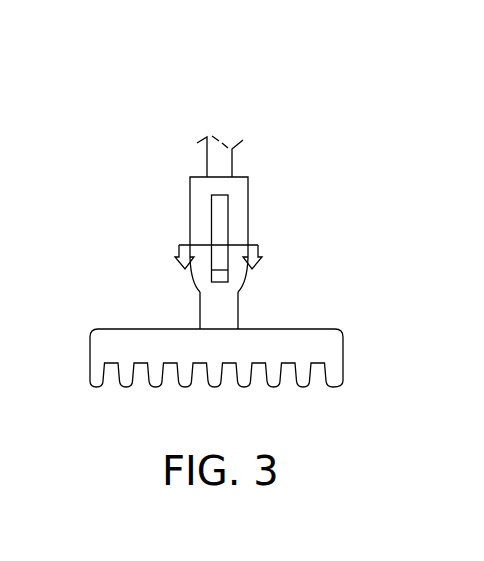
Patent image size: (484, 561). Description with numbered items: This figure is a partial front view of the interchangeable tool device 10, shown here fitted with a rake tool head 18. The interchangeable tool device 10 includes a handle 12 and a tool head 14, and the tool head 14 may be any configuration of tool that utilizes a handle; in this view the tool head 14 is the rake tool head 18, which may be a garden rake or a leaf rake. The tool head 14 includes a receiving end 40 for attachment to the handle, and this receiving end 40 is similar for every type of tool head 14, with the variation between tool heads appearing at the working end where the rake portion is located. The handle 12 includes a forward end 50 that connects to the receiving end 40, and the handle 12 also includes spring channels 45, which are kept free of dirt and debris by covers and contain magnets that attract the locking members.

The interchangeable tool device 10 is at (260, 93).
The handle 12 is at (245, 189).
The tool head 14 is at (236, 291).
The rake tool head 18 is at (333, 340).
The receiving end 40 is at (200, 272).
The spring channels 45 is at (100, 357).
The forward end 50 is at (200, 203).